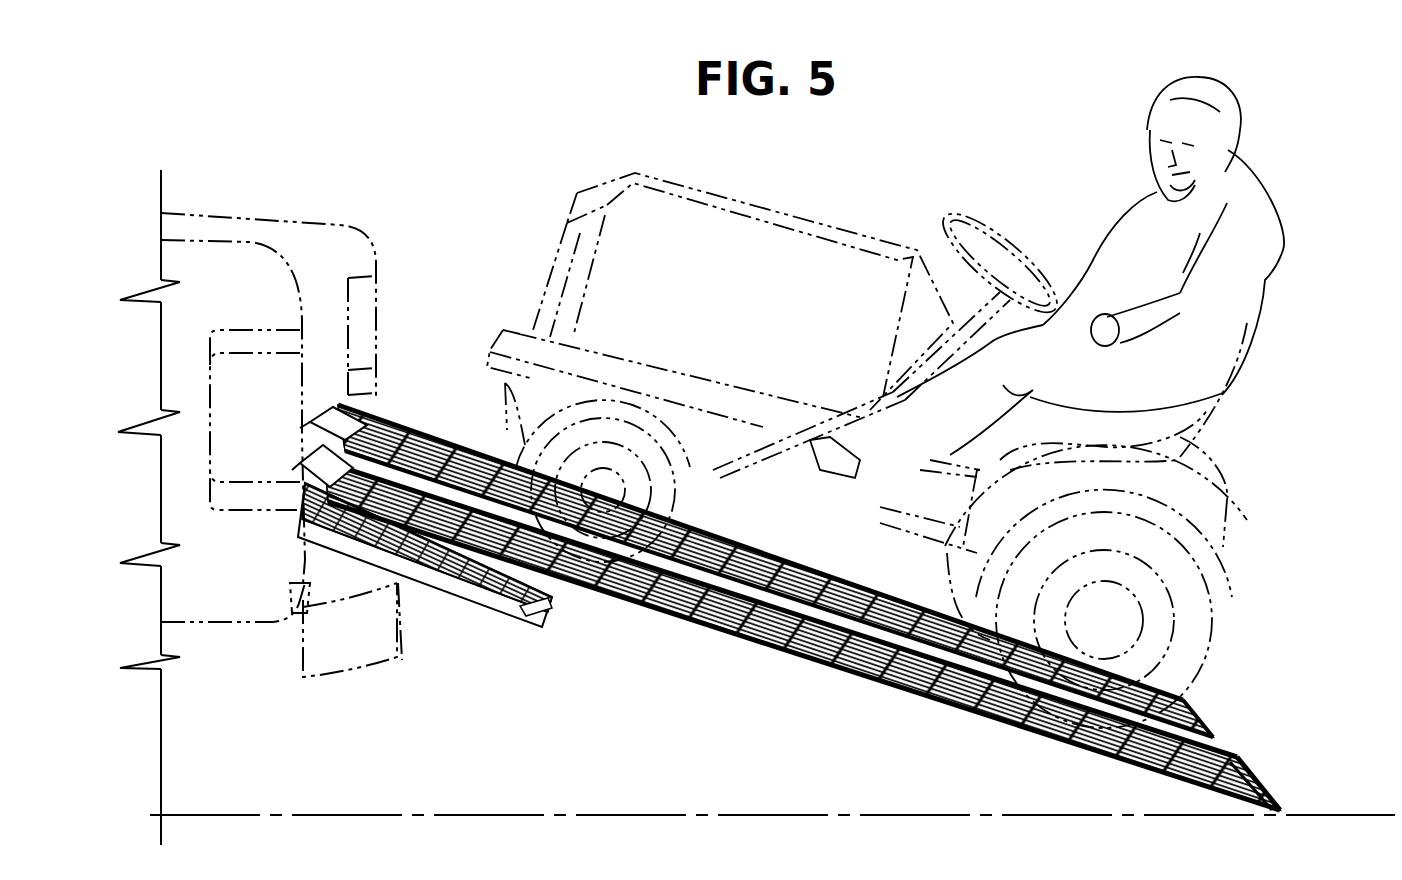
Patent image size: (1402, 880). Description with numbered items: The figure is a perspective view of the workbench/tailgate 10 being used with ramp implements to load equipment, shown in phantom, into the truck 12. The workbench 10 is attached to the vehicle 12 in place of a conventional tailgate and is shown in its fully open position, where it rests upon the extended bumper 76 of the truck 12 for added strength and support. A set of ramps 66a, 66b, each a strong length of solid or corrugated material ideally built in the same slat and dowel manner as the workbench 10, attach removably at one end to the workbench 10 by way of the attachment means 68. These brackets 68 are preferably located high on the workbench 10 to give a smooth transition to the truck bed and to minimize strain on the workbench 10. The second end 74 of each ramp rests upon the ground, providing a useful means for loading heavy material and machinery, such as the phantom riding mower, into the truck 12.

The workbench/tailgate 10 is at (555, 597).
The vehicle 12 is at (300, 218).
The ramp 66a is at (815, 530).
The ramp 66b is at (797, 610).
The attachment means 68 is at (352, 422).
The second end 74 is at (1273, 790).
The extended bumper 76 is at (398, 652).